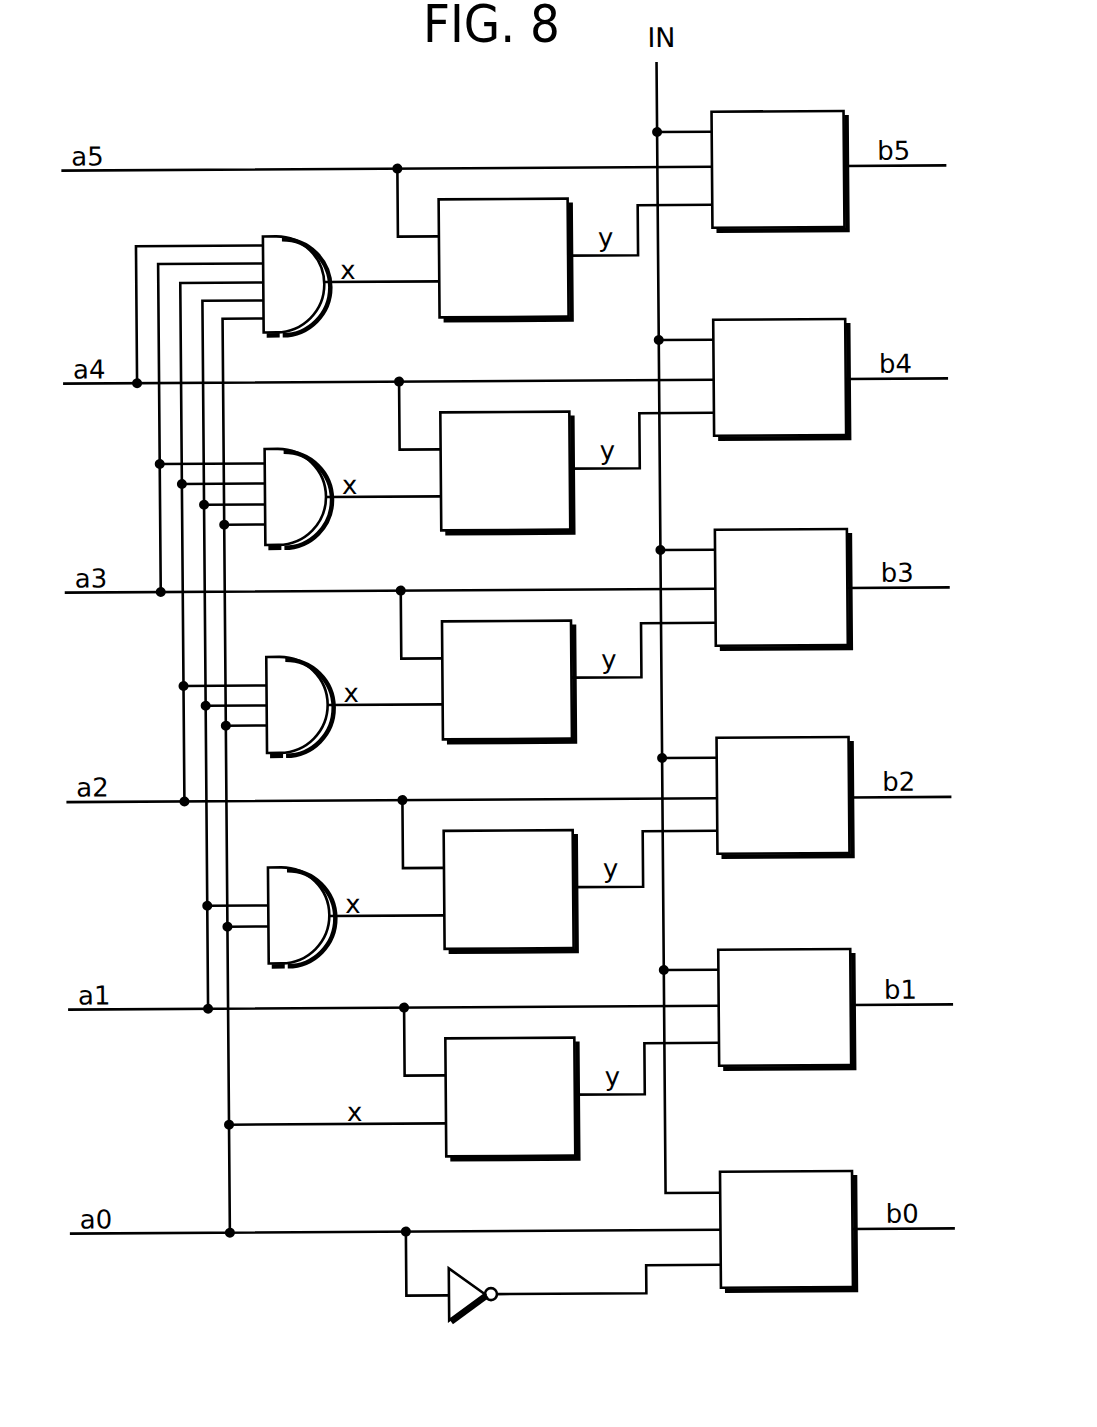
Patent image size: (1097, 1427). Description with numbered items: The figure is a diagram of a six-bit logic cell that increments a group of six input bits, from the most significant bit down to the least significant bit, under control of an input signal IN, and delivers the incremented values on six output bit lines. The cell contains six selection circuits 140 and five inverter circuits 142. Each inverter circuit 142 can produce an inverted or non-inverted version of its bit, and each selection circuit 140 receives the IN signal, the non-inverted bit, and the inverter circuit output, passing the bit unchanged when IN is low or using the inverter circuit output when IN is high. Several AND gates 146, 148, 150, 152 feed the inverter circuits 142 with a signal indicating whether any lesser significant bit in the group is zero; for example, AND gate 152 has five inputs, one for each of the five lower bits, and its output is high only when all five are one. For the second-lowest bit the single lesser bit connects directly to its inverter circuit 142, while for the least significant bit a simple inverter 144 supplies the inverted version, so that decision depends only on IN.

The selection circuit 140 is at (755, 215).
The inverter circuit 142 is at (480, 305).
The inverter 144 is at (477, 1275).
The AND gate 146 is at (266, 930).
The AND gate 148 is at (266, 719).
The AND gate 150 is at (266, 511).
The AND gate 152 is at (266, 299).